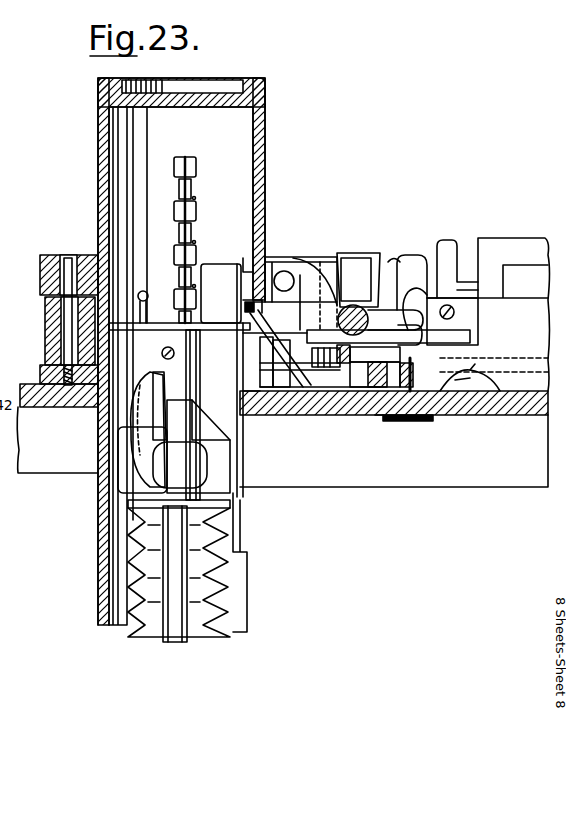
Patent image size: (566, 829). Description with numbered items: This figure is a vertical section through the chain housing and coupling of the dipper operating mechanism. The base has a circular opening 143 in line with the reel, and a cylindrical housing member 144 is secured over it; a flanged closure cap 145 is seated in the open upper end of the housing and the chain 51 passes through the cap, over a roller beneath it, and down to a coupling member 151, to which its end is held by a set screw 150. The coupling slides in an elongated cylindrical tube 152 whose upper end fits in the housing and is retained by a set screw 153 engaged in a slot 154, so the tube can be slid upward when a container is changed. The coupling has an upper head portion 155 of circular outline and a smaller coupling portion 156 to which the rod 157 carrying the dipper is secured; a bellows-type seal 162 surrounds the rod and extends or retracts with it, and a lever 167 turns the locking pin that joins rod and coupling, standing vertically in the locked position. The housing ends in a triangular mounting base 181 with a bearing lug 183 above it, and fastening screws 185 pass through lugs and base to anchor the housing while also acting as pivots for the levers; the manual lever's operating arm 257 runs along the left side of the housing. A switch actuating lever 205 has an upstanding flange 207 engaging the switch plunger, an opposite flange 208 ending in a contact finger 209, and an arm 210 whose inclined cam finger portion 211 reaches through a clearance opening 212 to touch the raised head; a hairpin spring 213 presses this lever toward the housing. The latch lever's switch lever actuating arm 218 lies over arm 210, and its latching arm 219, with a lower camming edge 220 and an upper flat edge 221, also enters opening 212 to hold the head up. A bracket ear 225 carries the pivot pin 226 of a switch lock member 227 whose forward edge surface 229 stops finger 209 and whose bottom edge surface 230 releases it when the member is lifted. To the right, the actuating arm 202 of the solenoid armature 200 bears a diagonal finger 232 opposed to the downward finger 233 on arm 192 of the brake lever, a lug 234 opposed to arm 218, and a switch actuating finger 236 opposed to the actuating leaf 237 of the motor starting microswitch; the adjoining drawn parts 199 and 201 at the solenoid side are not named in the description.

The chain 51 is at (186, 157).
The circular opening 143 is at (98, 396).
The cylindrical housing member 144 is at (98, 175).
The flanged closure cap 145 is at (206, 98).
The set screw 150 is at (174, 354).
The coupling member 151 is at (200, 367).
The elongated cylindrical tube 152 is at (100, 570).
The set screw 153 is at (146, 290).
The slot 154 is at (150, 322).
The upper head portion 155 is at (208, 323).
The coupling portion 156 is at (203, 440).
The rod 157 is at (176, 642).
The bellows-type seal 162 is at (231, 595).
The lever 167 is at (134, 456).
The mounting base 181 is at (40, 377).
The bearing lug 183 is at (46, 256).
The fastening screws 185 is at (64, 326).
The arm 192 is at (370, 320).
The frame member 199 is at (522, 247).
The solenoid armature 200 is at (448, 240).
The block 201 is at (462, 308).
The actuating arm 202 is at (312, 290).
The switch actuating lever 205 is at (398, 391).
The upstanding flange 207 is at (432, 420).
The upstanding flange 208 is at (365, 391).
The contact finger 209 is at (436, 331).
The arm 210 is at (286, 391).
The cam finger portion 211 is at (264, 391).
The clearance opening 212 is at (243, 265).
The hairpin spring 213 is at (418, 422).
The switch lever actuating arm 218 is at (335, 391).
The latching arm 219 is at (318, 391).
The inclined camming edge 220 is at (166, 420).
The flat edge 221 is at (236, 272).
The bracket ear 225 is at (292, 270).
The pivot pin 226 is at (286, 271).
The switch lock member 227 is at (350, 253).
The forward edge surface 229 is at (393, 262).
The bottom edge surface 230 is at (353, 303).
The finger 232 is at (410, 292).
The finger 233 is at (445, 346).
The lug 234 is at (277, 343).
The switch actuating finger 236 is at (475, 380).
The actuating leaf 237 is at (507, 375).
The operating arm 257 is at (45, 311).